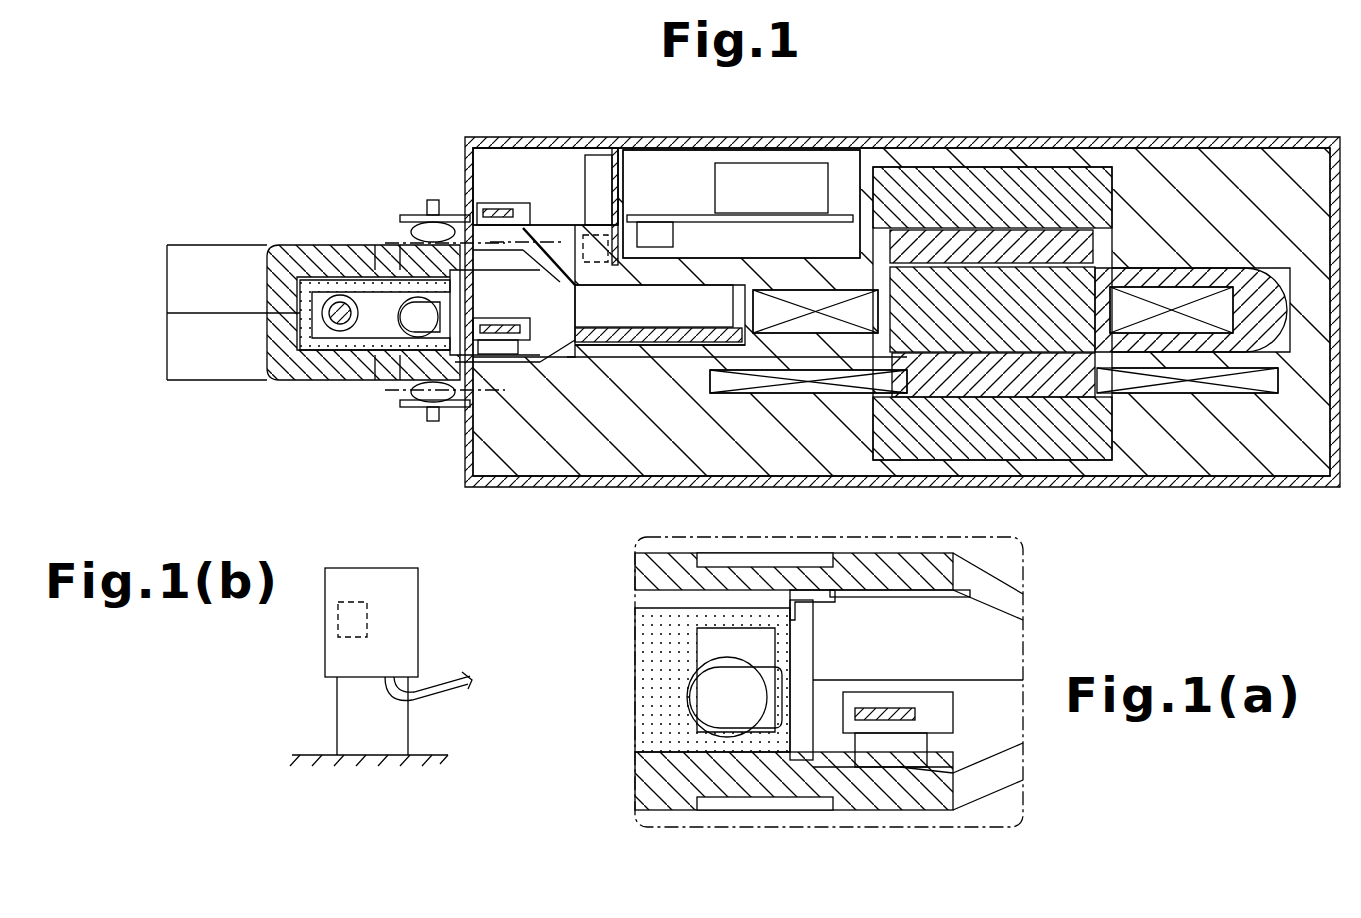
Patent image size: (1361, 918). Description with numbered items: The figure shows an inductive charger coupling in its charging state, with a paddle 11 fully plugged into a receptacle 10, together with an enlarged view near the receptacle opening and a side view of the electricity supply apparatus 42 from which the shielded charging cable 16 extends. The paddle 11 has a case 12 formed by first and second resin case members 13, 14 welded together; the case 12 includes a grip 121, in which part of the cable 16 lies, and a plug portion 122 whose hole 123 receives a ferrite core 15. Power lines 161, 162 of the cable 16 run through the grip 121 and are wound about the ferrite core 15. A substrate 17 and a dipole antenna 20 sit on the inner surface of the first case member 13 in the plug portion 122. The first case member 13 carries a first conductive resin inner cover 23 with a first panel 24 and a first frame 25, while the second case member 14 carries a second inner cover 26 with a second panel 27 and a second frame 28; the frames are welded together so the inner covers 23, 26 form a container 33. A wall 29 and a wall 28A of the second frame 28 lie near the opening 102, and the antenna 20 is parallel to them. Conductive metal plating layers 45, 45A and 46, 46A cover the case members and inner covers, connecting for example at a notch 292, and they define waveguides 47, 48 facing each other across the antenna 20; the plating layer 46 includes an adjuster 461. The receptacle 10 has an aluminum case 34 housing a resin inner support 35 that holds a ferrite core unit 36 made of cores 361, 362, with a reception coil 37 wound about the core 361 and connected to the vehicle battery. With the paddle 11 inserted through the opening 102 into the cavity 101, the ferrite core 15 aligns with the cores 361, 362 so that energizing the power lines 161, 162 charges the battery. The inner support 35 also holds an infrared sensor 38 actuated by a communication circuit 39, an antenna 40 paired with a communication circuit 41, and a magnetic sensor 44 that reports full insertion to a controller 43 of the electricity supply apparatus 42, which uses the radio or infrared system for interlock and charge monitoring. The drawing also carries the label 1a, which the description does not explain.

In FIG. 1, the receptacle 10 is at (1278, 530).
In FIG. 1, the paddle 11 is at (278, 165).
In FIG. 1, the case 12 is at (200, 245).
In FIG. 1, the first case member 13 is at (215, 380).
In FIG. 1a, the first case member 13 is at (1023, 771).
In FIG. 1, the second case member 14 is at (243, 258).
In FIG. 1a, the second case member 14 is at (1020, 604).
In FIG. 1, the ferrite core 15 is at (1090, 215).
In FIG. 1b, the shielded charging cable 16 is at (452, 692).
In FIG. 1, the substrate 17 is at (677, 345).
In FIG. 1, the axis 1a is at (578, 395).
In FIG. 1, the dipole antenna 20 is at (522, 327).
In FIG. 1a, the dipole antenna 20 is at (953, 712).
In FIG. 1, the first conductive resin inner cover 23 is at (298, 488).
In FIG. 1a, the first conductive resin inner cover 23 is at (640, 780).
In FIG. 1, the first panel 24 is at (300, 350).
In FIG. 1, the first frame 25 is at (258, 345).
In FIG. 1, the second conductive resin inner cover 26 is at (300, 192).
In FIG. 1a, the second conductive resin inner cover 26 is at (660, 578).
In FIG. 1, the second panel 27 is at (383, 262).
In FIG. 1, the second frame 28 is at (300, 258).
In FIG. 1, the wall 28A is at (478, 265).
In FIG. 1a, the wall 28A is at (830, 600).
In FIG. 1, the wall 29 is at (490, 365).
In FIG. 1a, the wall 29 is at (795, 692).
In FIG. 1, the container 33 is at (338, 332).
In FIG. 1, the aluminum case 34 is at (677, 140).
In FIG. 1, the resin inner support 35 is at (1186, 162).
In FIG. 1, the ferrite core unit 36 is at (1134, 505).
In FIG. 1, the core 361 is at (1010, 385).
In FIG. 1, the core 362 is at (1045, 355).
In FIG. 1, the reception coil 37 is at (1190, 395).
In FIG. 1, the infrared sensor 38 is at (650, 224).
In FIG. 1, the communication circuit 39 is at (740, 165).
In FIG. 1, the antenna 40 is at (492, 203).
In FIG. 1, the communication circuit 41 is at (582, 160).
In FIG. 1b, the electricity supply apparatus 42 is at (418, 610).
In FIG. 1b, the controller 43 is at (338, 621).
In FIG. 1, the magnetic sensor 44 is at (590, 245).
In FIG. 1, the conductive metal plating layer 45 is at (545, 375).
In FIG. 1a, the conductive metal plating layer 45 is at (960, 790).
In FIG. 1, the conductive metal plating layer 45A is at (320, 342).
In FIG. 1a, the conductive metal plating layer 45A is at (650, 746).
In FIG. 1, the conductive metal plating layer 46 is at (558, 268).
In FIG. 1a, the conductive metal plating layer 46 is at (840, 602).
In FIG. 1, the conductive metal plating layer 46A is at (320, 290).
In FIG. 1a, the conductive metal plating layer 46A is at (650, 634).
In FIG. 1a, the waveguide 47 is at (927, 757).
In FIG. 1a, the waveguide 48 is at (886, 598).
In FIG. 1a, the adjuster 461 is at (956, 598).
In FIG. 1, the cavity 101 is at (617, 345).
In FIG. 1, the opening 102 is at (458, 415).
In FIG. 1, the grip 121 is at (189, 383).
In FIG. 1, the plug portion 122 is at (1276, 276).
In FIG. 1, the hole 123 is at (1078, 283).
In FIG. 1, the power line 161 is at (332, 330).
In FIG. 1, the power line 162 is at (423, 330).
In FIG. 1a, the power line 162 is at (645, 706).
In FIG. 1, the notch 292 is at (466, 310).
In FIG. 1a, the notch 292 is at (818, 710).